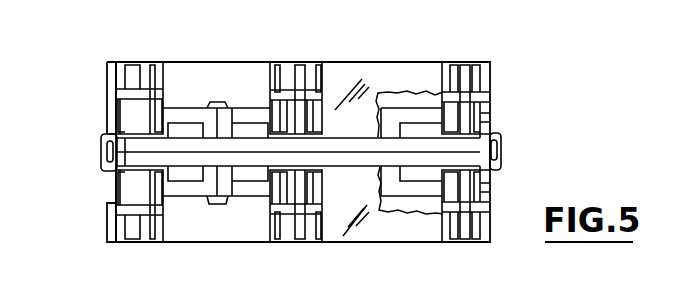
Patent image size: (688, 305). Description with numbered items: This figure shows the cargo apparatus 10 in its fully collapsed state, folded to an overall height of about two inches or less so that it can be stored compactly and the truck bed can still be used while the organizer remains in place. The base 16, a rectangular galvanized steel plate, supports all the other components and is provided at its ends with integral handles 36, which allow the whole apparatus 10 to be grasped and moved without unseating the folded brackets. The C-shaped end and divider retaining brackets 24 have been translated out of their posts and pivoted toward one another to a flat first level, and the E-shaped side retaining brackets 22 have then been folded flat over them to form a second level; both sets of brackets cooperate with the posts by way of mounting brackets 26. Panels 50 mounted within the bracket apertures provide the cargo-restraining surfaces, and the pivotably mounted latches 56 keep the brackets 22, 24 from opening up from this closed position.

The cargo apparatus 10 is at (598, 84).
The base 16 is at (192, 63).
The E-shaped side retaining bracket 22 is at (485, 118).
The C-shaped end retaining bracket 24 is at (402, 104).
The mounting bracket 26 is at (156, 102).
The integral handle 36 is at (497, 146).
The panel 50 is at (360, 78).
The latch 56 is at (219, 102).